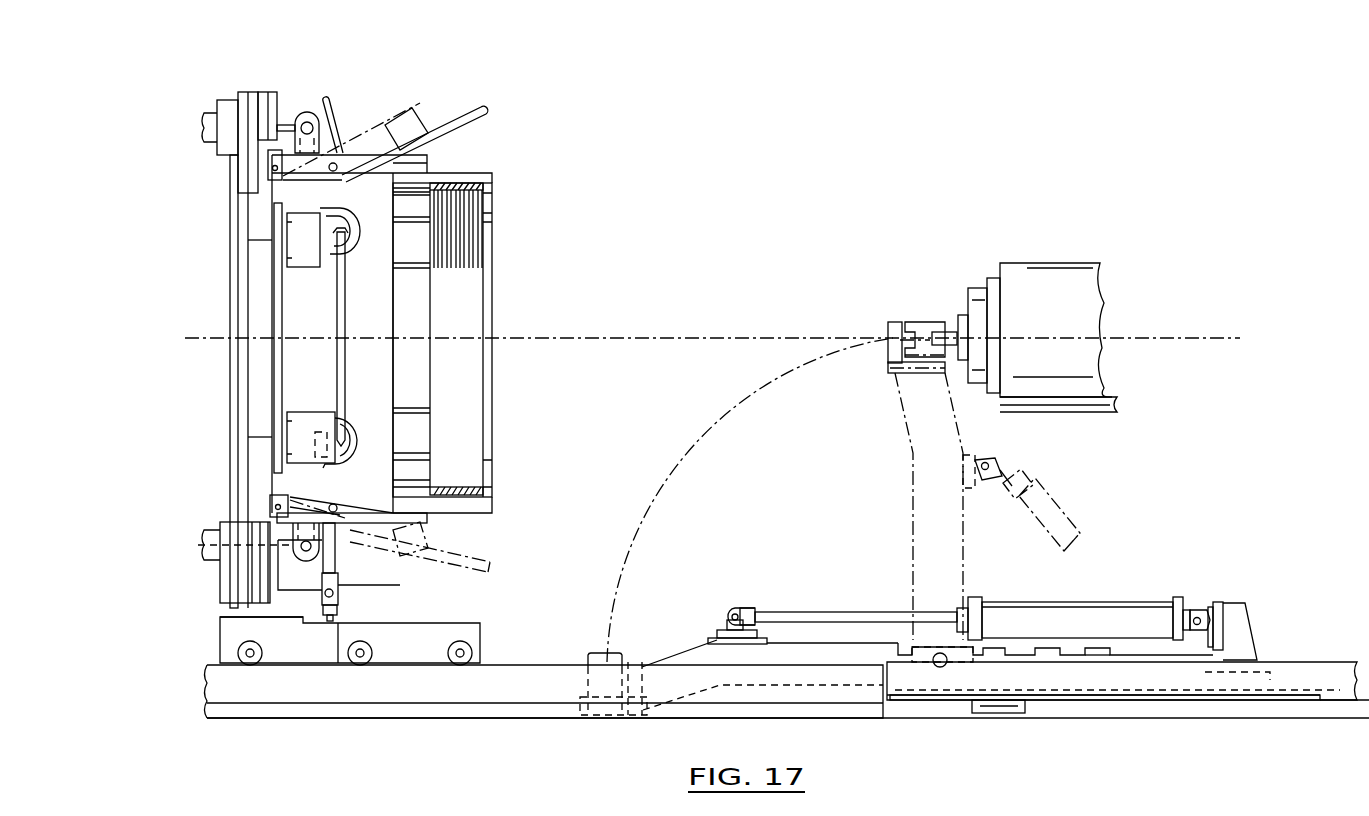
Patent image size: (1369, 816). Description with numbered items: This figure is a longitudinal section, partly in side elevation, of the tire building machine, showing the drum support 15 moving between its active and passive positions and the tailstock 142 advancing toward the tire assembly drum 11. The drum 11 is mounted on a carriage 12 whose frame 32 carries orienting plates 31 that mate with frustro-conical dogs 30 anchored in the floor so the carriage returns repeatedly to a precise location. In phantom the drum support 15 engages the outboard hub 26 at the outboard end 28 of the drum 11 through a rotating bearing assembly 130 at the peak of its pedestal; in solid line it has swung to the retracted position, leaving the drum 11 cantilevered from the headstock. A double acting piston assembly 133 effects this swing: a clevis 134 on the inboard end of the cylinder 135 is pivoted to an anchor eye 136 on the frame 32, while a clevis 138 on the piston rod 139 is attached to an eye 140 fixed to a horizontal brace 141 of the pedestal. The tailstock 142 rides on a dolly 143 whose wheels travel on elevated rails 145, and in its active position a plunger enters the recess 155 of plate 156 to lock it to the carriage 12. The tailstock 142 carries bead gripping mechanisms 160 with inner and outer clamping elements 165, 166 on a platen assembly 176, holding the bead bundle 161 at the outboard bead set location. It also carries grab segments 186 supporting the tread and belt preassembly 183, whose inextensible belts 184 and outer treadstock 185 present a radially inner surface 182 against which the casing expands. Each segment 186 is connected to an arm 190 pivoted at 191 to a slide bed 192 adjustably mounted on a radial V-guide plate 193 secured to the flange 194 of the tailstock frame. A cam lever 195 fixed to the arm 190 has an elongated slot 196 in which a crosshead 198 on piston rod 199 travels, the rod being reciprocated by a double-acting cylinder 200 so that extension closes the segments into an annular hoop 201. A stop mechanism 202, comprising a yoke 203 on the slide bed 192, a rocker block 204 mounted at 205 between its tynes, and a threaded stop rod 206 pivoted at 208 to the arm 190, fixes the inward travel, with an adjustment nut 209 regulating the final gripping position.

The tire assembly drum 11 is at (1100, 290).
The carriage 12 is at (1295, 655).
The drum support 15 is at (688, 632).
The outboard hub 26 is at (940, 322).
The outboard end 28 is at (967, 268).
The frustro-conical dogs 30 is at (1007, 712).
The orienting plates 31 is at (1028, 706).
The frame 32 is at (1330, 668).
The rotating bearing assembly 130 is at (600, 652).
The double acting piston assembly 133 is at (1058, 600).
The clevis 134 is at (1196, 608).
The cylinder 135 is at (1138, 600).
The anchor eye 136 is at (1207, 600).
The clevis 138 is at (748, 606).
The piston rod 139 is at (830, 612).
The eye 140 is at (735, 620).
The horizontal brace 141 is at (745, 643).
The tailstock 142 is at (568, 132).
The dolly 143 is at (462, 628).
The elevated rails 145 is at (292, 712).
The recess 155 is at (1040, 648).
The plate 156 is at (1088, 660).
The bead gripping mechanisms 160 is at (262, 277).
The bead bundle 161 is at (340, 352).
The inner clamping elements 165 is at (341, 265).
The outer clamping elements 166 is at (352, 240).
The platen assembly 176 is at (252, 252).
The radially inner surface 182 is at (480, 485).
The tread and belt preassembly 183 is at (488, 186).
The belts 184 is at (480, 212).
The treadstock 185 is at (478, 505).
The grab segments 186 is at (476, 165).
The arm 190 is at (400, 160).
The pivot 191 is at (268, 172).
The slide bed 192 is at (262, 98).
The radial V-guide plate 193 is at (244, 98).
The flange 194 is at (236, 162).
The cam lever 195 is at (309, 112).
The elongated slot 196 is at (333, 125).
The crosshead 198 is at (330, 563).
The piston rod 199 is at (290, 585).
The double-acting cylinder 200 is at (208, 532).
The annular hoop 201 is at (398, 366).
The stop mechanism 202 is at (365, 600).
The yoke 203 is at (262, 620).
The rocker block 204 is at (392, 548).
The rocker block mounting 205 is at (340, 596).
The threaded stop rod 206 is at (345, 528).
The pivot 208 is at (338, 505).
The adjustment nut 209 is at (338, 648).